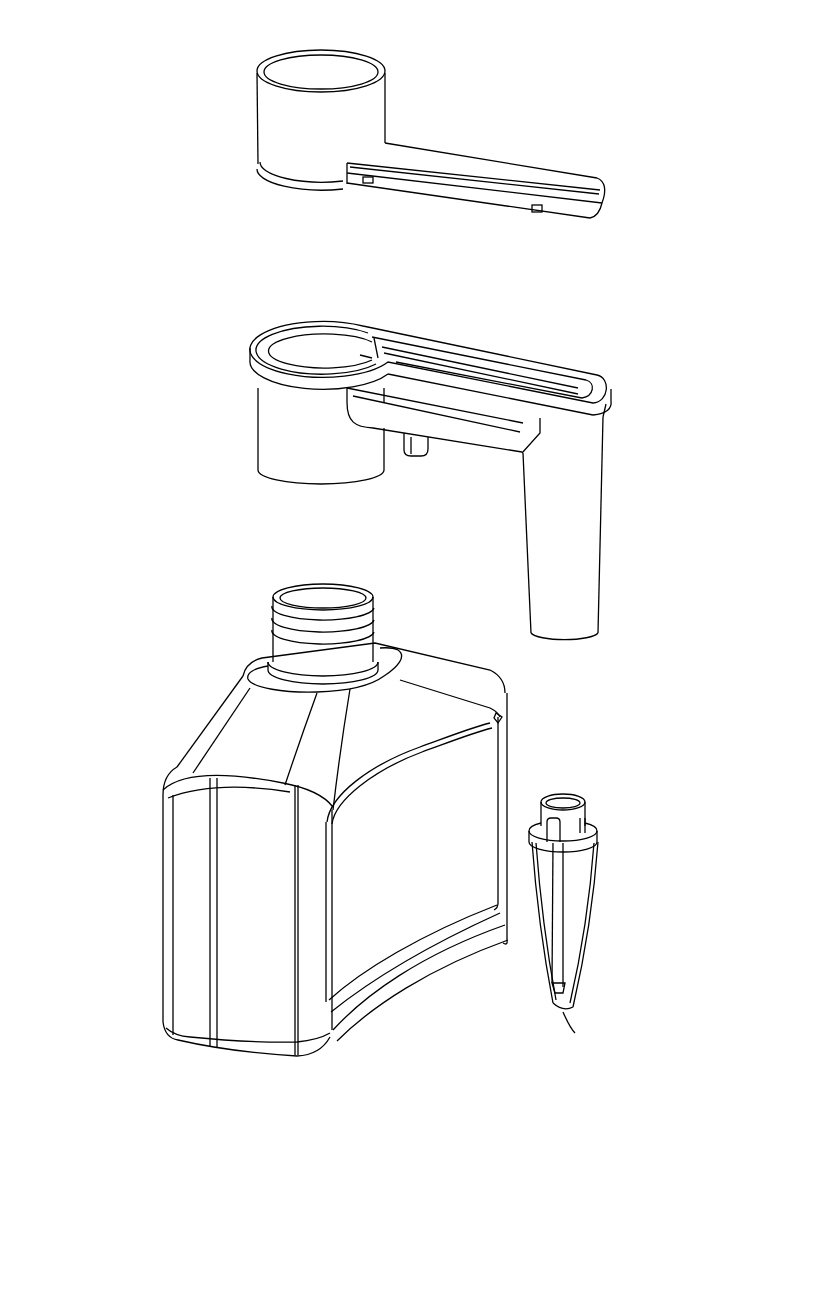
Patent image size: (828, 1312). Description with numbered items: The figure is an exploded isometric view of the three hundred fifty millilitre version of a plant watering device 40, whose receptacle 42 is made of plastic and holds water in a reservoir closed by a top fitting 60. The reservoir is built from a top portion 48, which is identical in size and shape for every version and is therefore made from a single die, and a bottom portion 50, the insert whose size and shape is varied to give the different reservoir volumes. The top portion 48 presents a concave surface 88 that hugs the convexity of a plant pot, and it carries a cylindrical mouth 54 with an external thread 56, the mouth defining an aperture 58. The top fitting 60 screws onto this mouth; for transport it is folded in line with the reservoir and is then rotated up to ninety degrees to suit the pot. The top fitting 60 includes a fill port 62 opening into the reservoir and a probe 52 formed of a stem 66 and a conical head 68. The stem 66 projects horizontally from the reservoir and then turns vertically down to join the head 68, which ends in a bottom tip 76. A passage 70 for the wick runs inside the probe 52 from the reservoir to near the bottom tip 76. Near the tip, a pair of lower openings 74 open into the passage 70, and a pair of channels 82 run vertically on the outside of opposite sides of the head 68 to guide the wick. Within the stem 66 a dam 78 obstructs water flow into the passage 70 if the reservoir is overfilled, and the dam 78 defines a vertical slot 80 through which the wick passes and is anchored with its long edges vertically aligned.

The watering device 40 is at (113, 427).
The receptacle 42 is at (220, 698).
The top portion 48 is at (160, 792).
The bottom portion 50 is at (370, 997).
The probe 52 is at (430, 204).
The cylindrical mouth 54 is at (370, 597).
The external thread 56 is at (372, 627).
The aperture 58 is at (306, 606).
The top fitting 60 is at (255, 135).
The fill port 62 is at (348, 53).
The stem 66 is at (606, 435).
The conical head 68 is at (597, 888).
The passage 70 is at (504, 380).
The lower openings 74 is at (549, 990).
The bottom tip 76 is at (573, 1033).
The dam 78 is at (373, 353).
The vertical slot 80 is at (367, 357).
The channels 82 is at (552, 905).
The concave surface 88 is at (418, 893).